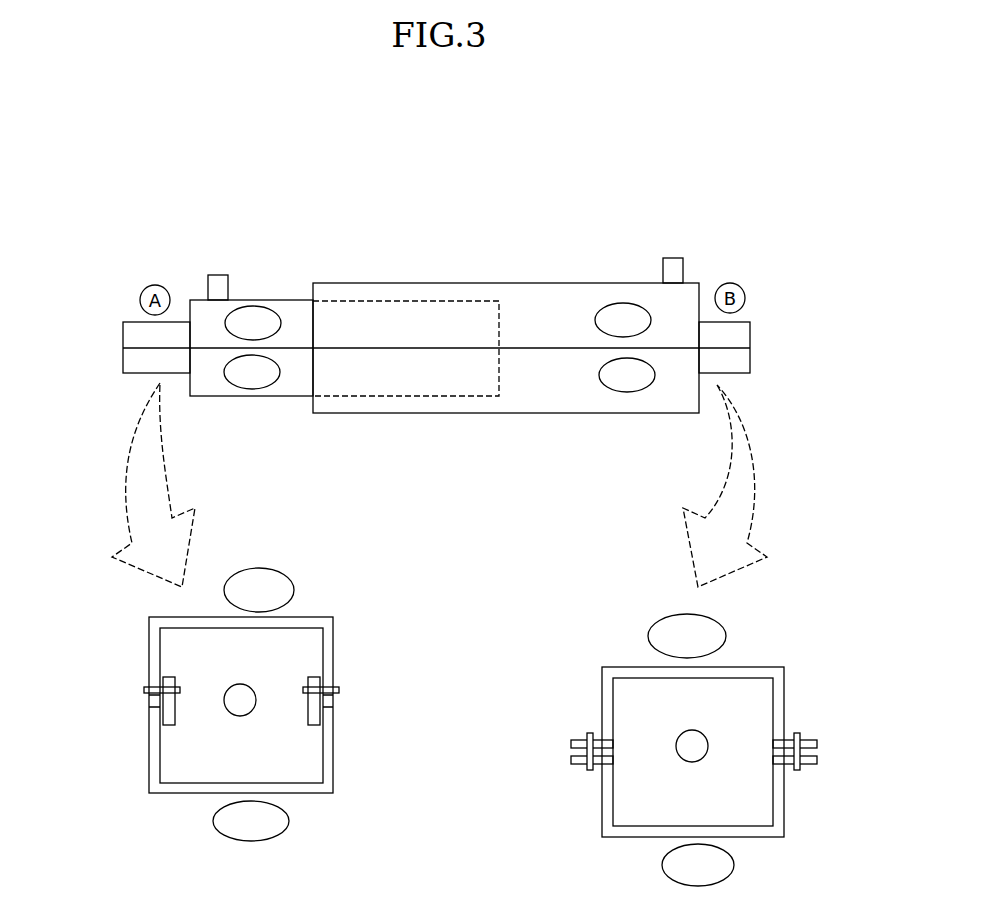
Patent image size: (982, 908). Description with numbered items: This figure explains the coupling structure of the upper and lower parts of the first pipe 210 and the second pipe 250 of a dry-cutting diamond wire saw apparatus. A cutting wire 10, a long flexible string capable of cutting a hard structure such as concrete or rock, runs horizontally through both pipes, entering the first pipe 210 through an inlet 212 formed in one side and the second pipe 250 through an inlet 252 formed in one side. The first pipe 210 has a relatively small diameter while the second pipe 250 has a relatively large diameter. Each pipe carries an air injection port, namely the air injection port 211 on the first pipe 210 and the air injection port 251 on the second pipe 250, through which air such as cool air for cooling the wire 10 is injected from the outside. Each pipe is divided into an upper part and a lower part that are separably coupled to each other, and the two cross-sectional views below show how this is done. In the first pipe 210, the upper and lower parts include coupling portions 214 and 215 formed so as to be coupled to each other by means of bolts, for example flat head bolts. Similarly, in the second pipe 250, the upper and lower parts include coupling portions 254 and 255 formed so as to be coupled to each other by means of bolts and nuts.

The wire 10 is at (572, 348).
The first pipe 210 is at (283, 300).
The air injection port 211 is at (219, 275).
The inlet 212 is at (123, 358).
The coupling portion 214 is at (148, 688).
The coupling portion 215 is at (335, 688).
The second pipe 250 is at (598, 283).
The air injection port 251 is at (680, 258).
The inlet 252 is at (752, 363).
The coupling portion 254 is at (590, 733).
The coupling portion 255 is at (798, 737).